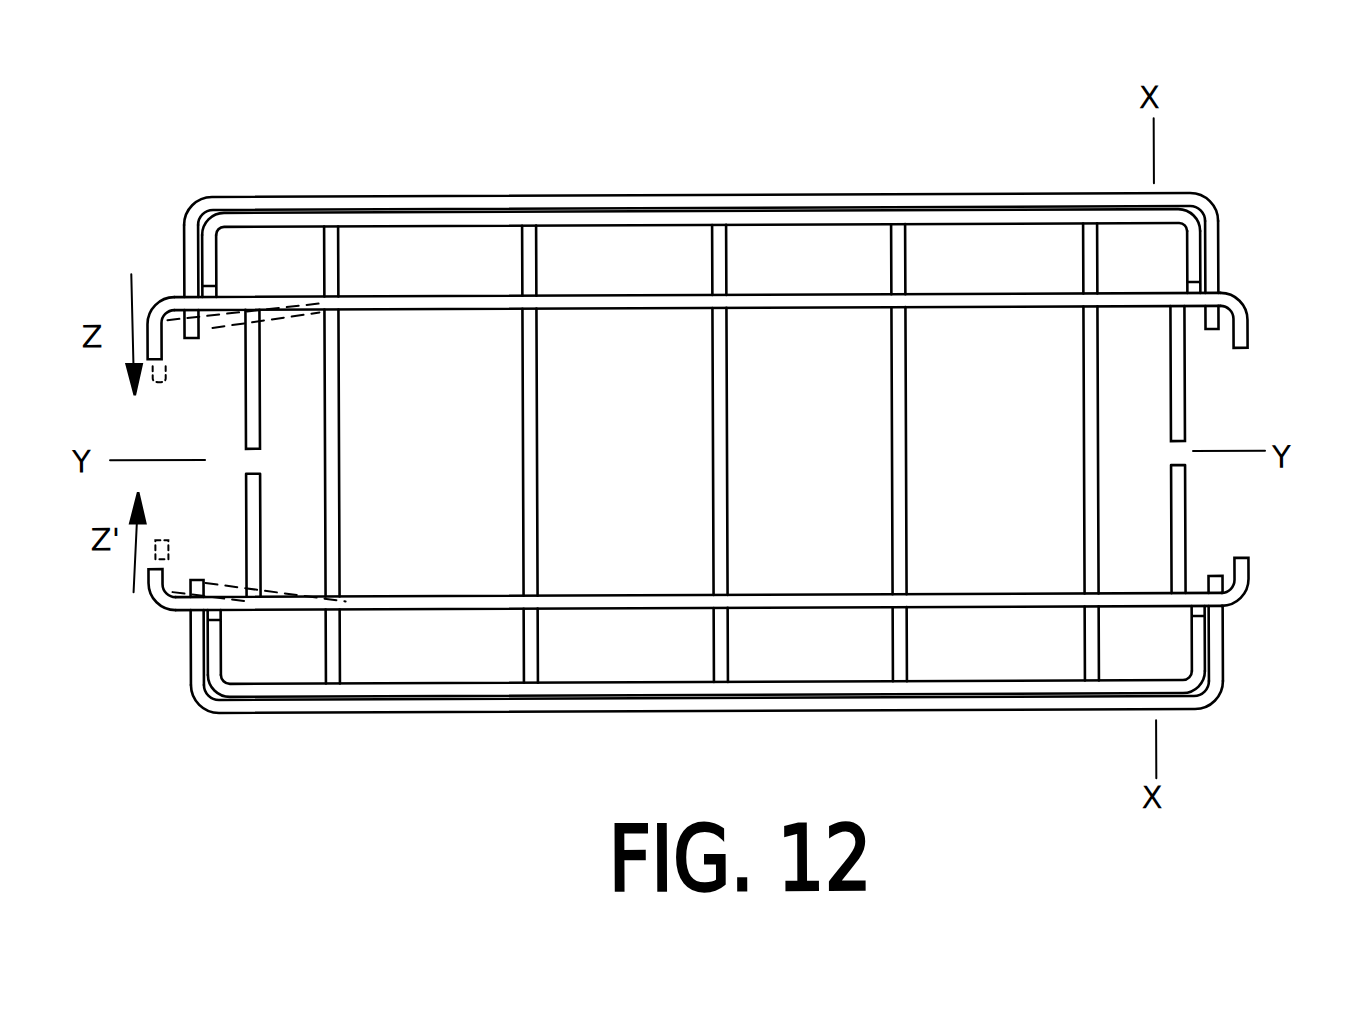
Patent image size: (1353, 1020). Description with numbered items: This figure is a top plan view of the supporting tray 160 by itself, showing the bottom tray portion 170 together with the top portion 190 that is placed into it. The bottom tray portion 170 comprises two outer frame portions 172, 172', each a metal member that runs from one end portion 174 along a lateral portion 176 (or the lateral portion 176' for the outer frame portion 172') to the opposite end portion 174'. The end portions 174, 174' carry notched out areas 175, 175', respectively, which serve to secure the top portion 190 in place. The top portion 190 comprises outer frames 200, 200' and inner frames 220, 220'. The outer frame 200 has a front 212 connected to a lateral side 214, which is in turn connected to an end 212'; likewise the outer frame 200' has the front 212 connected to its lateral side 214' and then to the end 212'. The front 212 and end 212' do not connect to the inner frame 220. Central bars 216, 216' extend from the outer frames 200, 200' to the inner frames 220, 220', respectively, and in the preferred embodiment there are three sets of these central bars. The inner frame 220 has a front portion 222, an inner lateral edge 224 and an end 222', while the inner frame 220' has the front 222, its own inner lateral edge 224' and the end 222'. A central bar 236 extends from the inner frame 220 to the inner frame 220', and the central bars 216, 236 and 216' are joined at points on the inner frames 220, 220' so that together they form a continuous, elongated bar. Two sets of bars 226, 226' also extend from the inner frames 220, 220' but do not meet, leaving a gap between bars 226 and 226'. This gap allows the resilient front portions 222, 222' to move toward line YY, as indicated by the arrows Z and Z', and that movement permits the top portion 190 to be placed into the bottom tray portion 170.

The support tray 160 is at (1012, 178).
The bottom tray portion 170 is at (330, 178).
The outer frame portion 172 is at (707, 731).
The outer frame portion 172' is at (701, 158).
The end portion 174 is at (130, 470).
The end portion 174' is at (1278, 435).
The notched out area 175 is at (130, 467).
The notched out area 175' is at (1271, 429).
The lateral portion 176 is at (706, 735).
The lateral portion 176' is at (701, 171).
The top portion 190 is at (227, 205).
The outer frame 200 is at (698, 676).
The outer frame 200' is at (694, 236).
The front 212 is at (190, 426).
The end 212' is at (1251, 437).
The lateral side 214 is at (706, 726).
The lateral side 214' is at (701, 184).
The central bar 216 is at (819, 452).
The central bar 216' is at (773, 419).
The inner frame 220 is at (795, 453).
The inner frame 220' is at (624, 269).
The front portion 222 is at (184, 453).
The end 222' is at (1270, 449).
The inner lateral edge 224 is at (419, 562).
The inner lateral edge 224' is at (394, 455).
The bar 226 is at (327, 453).
The bar 226' is at (1146, 449).
The central bar 236 is at (908, 503).